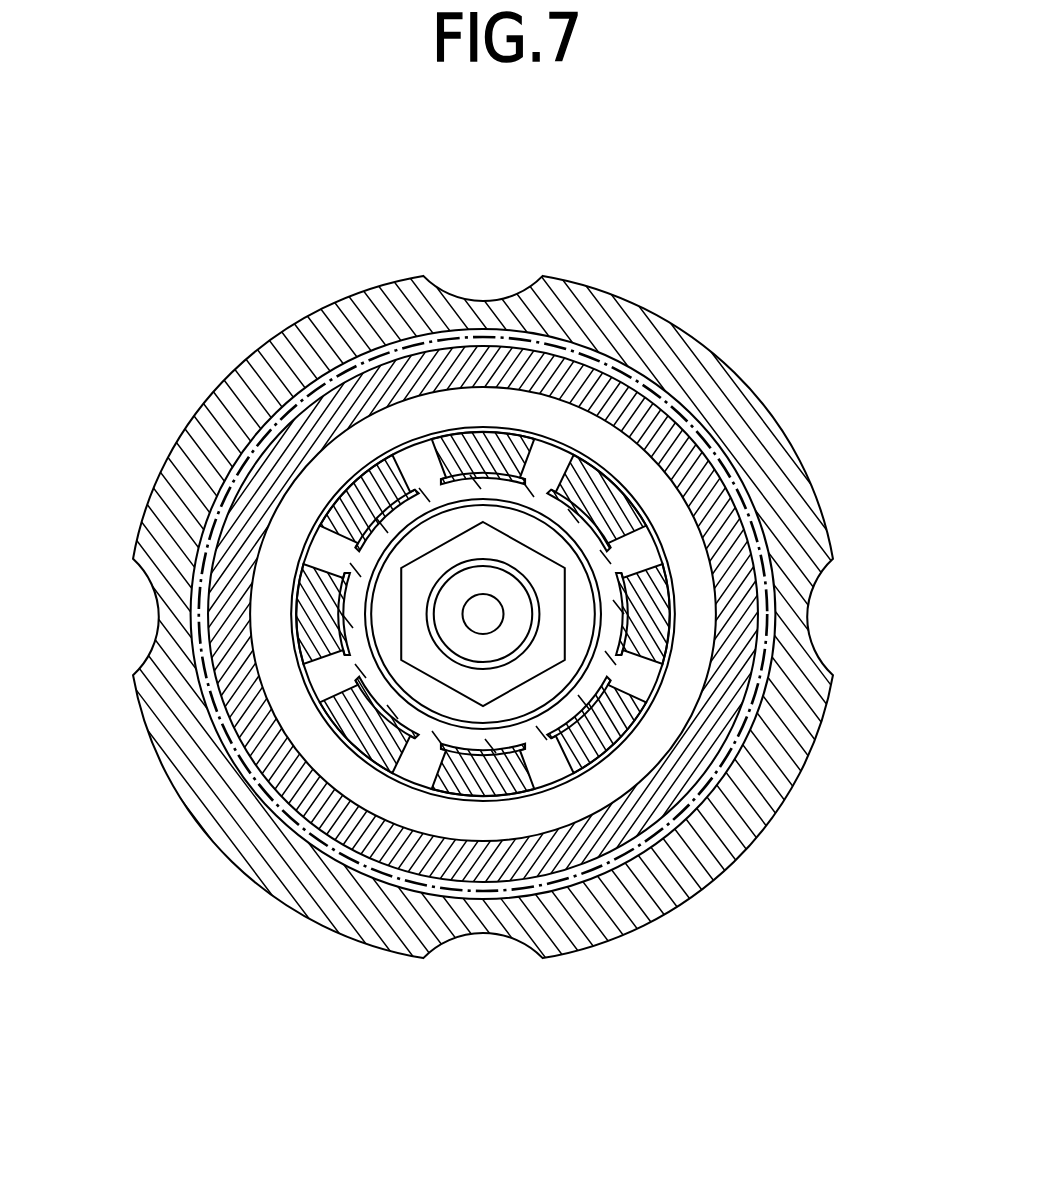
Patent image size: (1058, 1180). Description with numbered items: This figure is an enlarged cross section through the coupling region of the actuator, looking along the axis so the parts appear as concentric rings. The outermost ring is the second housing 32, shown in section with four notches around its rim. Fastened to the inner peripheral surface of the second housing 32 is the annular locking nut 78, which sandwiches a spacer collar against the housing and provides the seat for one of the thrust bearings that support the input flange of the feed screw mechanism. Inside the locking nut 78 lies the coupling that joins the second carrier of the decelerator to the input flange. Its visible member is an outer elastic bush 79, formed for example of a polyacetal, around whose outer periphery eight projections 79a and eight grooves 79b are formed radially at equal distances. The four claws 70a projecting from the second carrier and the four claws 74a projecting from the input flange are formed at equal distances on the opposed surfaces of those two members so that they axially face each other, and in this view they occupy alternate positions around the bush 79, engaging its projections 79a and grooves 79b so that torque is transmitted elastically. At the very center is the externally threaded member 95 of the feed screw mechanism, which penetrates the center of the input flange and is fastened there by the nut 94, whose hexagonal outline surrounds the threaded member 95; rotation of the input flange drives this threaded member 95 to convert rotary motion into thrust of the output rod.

The second housing 32 is at (660, 302).
The locking nut 78 is at (232, 428).
The outer elastic bush 79 is at (655, 600).
The claw 74a is at (468, 443).
The claw 70a is at (357, 476).
The projection 79a is at (410, 458).
The groove 79b is at (497, 477).
The nut 94 is at (427, 595).
The externally threaded member 95 is at (500, 588).